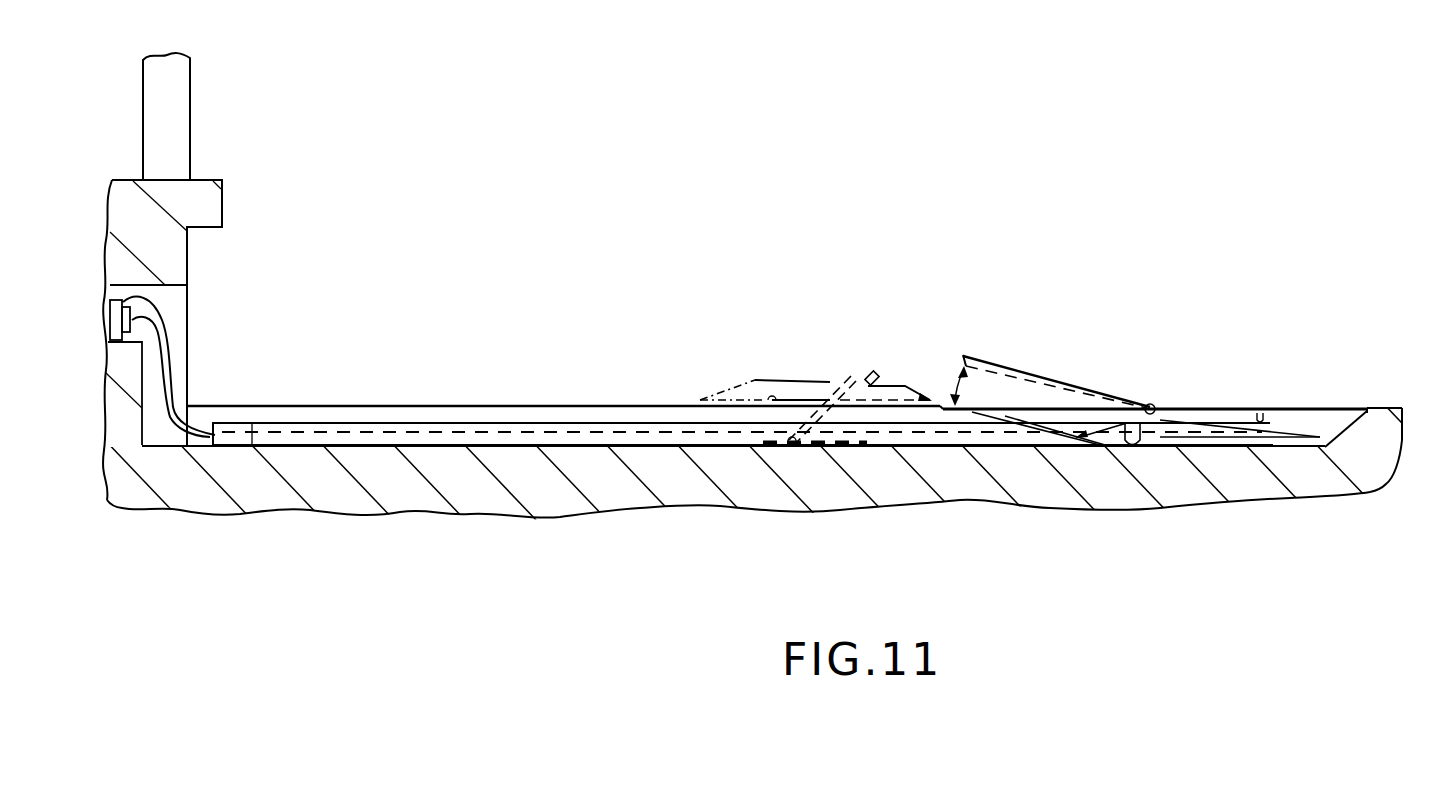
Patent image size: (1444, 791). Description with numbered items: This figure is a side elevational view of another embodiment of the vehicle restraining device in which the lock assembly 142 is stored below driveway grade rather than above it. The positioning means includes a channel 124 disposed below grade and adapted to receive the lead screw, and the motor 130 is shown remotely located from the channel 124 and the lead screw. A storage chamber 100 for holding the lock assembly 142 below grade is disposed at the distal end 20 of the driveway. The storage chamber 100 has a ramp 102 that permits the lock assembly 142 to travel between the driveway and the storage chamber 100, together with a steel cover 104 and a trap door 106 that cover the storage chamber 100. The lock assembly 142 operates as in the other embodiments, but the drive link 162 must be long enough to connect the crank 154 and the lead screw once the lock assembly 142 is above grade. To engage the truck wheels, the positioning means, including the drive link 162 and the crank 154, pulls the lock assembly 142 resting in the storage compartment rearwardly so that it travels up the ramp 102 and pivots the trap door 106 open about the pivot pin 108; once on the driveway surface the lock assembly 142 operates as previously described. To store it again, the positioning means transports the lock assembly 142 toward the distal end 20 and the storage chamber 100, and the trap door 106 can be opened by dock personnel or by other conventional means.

The distal end of the driveway 20 is at (1368, 408).
The storage chamber 100 is at (1313, 425).
The ramp 102 is at (993, 418).
The steel cover 104 is at (1243, 403).
The trap door 106 is at (1150, 402).
The pivot pin 108 is at (1152, 404).
The channel 124 is at (533, 432).
The motor 130 is at (187, 320).
The lock assembly 142 is at (772, 403).
The crank 154 is at (876, 378).
The drive link 162 is at (842, 400).